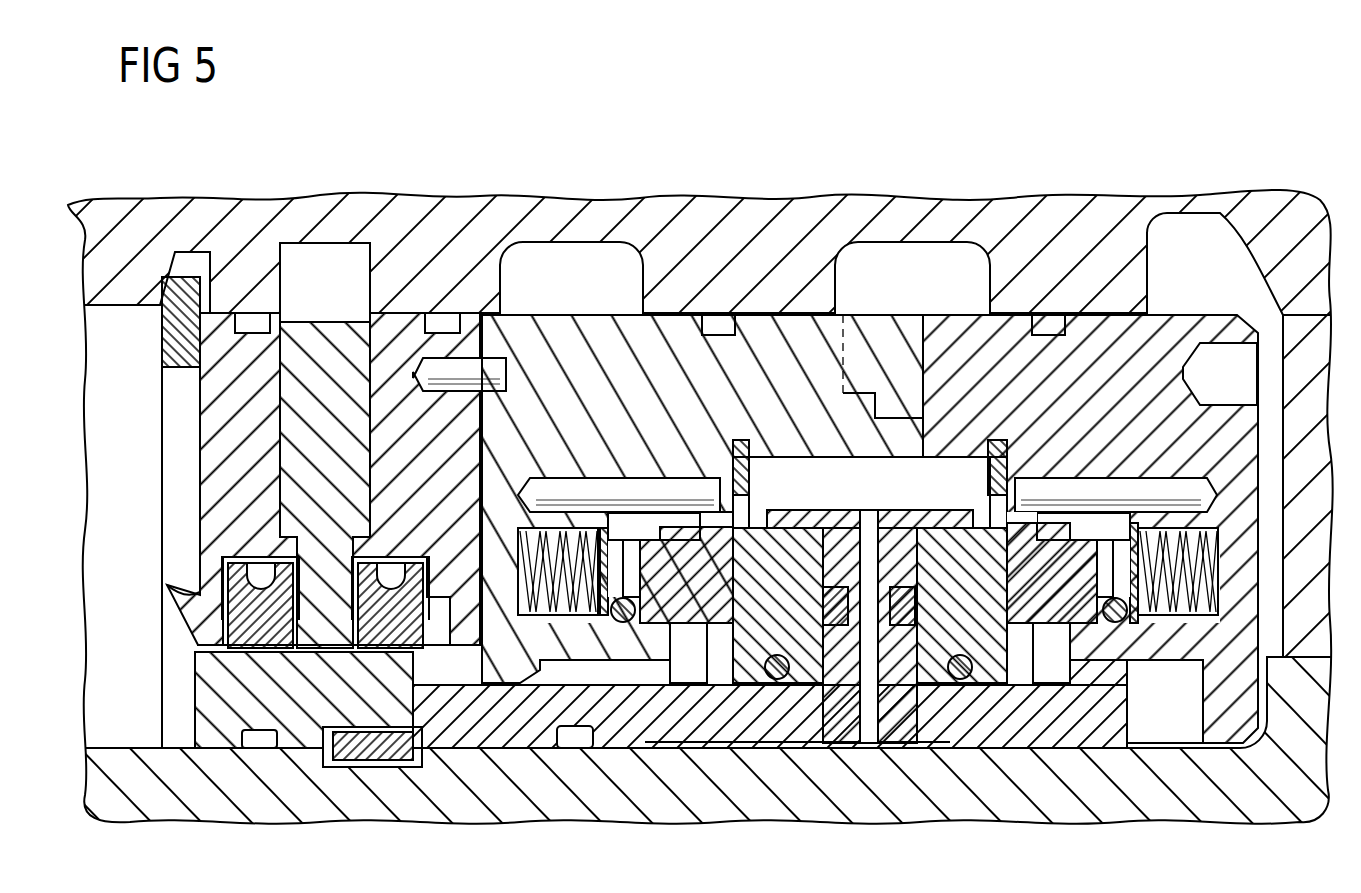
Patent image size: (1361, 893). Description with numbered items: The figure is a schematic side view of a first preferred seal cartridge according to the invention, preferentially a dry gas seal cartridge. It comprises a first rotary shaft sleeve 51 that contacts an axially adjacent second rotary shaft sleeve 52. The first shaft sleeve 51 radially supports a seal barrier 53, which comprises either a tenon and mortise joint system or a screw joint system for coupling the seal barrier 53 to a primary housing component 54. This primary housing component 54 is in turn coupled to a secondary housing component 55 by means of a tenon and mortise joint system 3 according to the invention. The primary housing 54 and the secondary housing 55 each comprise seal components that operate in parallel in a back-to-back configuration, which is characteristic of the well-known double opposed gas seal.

The tenon and mortise joint system 3 is at (885, 355).
The first rotary shaft sleeve 51 is at (300, 695).
The second rotary shaft sleeve 52 is at (838, 700).
The seal barrier 53 is at (327, 360).
The primary housing component 54 is at (760, 360).
The secondary housing component 55 is at (1112, 360).